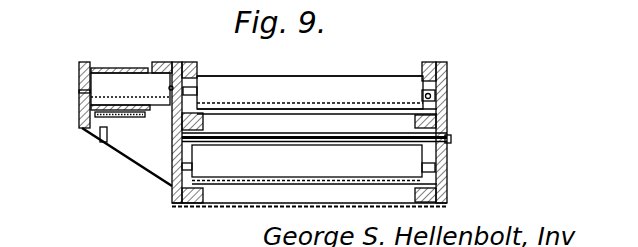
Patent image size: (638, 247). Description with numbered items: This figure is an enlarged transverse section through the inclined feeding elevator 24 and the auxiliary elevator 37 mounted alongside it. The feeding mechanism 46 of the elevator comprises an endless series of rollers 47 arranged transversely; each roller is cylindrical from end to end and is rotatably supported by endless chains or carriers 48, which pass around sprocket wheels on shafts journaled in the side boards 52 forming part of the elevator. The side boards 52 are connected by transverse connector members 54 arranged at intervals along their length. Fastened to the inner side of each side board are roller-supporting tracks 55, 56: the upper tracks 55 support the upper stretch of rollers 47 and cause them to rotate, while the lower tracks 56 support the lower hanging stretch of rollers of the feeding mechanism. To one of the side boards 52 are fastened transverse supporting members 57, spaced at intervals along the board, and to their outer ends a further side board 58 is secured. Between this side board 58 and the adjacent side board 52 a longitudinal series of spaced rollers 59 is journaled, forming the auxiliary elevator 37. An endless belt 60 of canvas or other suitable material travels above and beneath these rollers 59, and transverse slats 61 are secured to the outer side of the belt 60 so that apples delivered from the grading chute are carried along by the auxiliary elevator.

The inclined feeding elevator 24 is at (448, 80).
The auxiliary elevator 37 is at (93, 68).
The feeding mechanism 46 is at (357, 77).
The rollers 47 is at (314, 130).
The endless chains or carriers 48 is at (168, 186).
The side boards 52 is at (172, 155).
The transverse connector members 54 is at (243, 206).
The roller-supporting tracks 55 is at (172, 128).
The lower roller-supporting tracks 56 is at (180, 205).
The transverse supporting members 57 is at (108, 138).
The side board 58 is at (82, 110).
The rollers 59 is at (132, 89).
The endless belt 60 is at (158, 64).
The transverse slats 61 is at (130, 67).